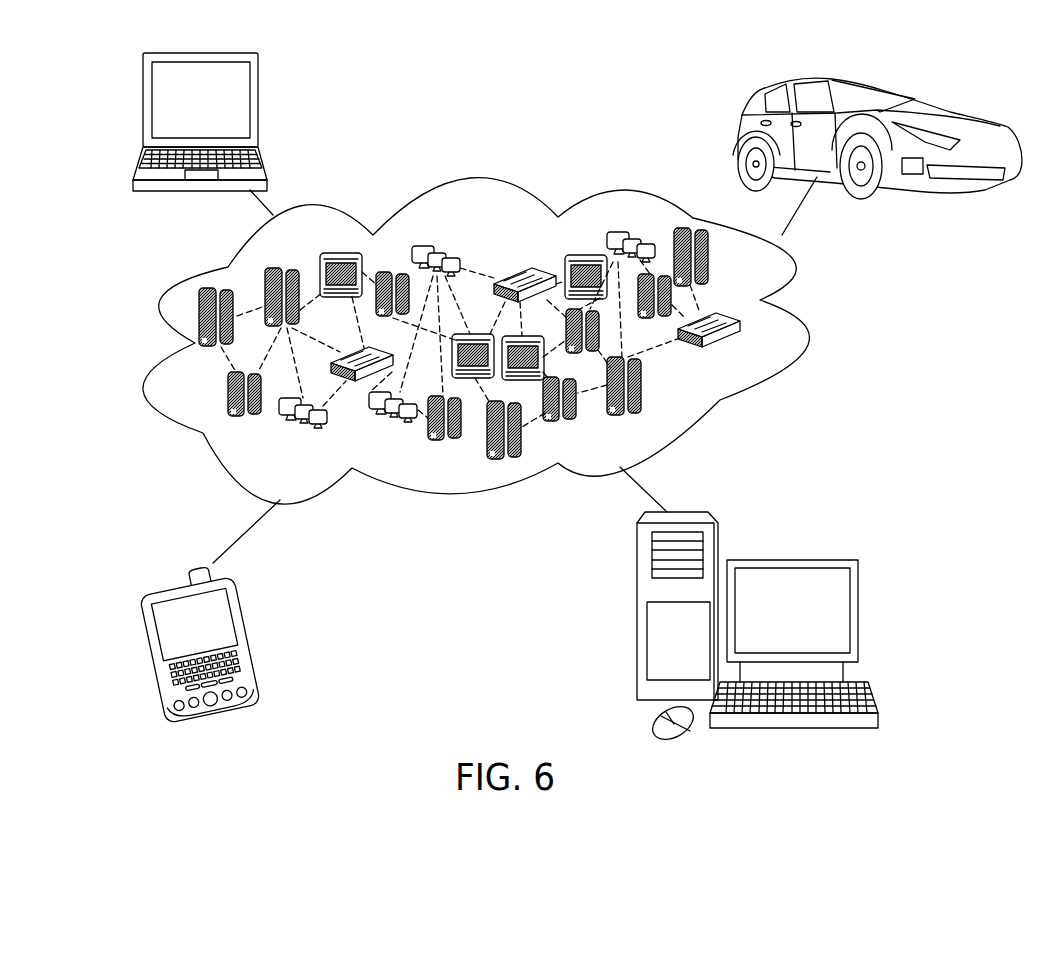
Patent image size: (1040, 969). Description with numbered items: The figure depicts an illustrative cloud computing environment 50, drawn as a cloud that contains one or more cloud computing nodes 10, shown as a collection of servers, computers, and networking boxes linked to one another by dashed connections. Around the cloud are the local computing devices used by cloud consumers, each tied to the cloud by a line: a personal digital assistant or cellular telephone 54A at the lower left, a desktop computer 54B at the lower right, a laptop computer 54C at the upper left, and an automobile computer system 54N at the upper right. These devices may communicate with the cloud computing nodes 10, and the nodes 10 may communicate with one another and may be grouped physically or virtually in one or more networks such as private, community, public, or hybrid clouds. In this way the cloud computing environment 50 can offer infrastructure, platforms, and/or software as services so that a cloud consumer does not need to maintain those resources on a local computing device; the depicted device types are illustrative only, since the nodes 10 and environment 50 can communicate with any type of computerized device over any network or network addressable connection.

The cloud computing nodes 10 is at (770, 354).
The cloud computing environment 50 is at (807, 332).
The personal digital assistant (PDA) or cellular telephone 54A is at (248, 632).
The desktop computer 54B is at (822, 560).
The laptop computer 54C is at (258, 117).
The automobile computer system 54N is at (933, 103).